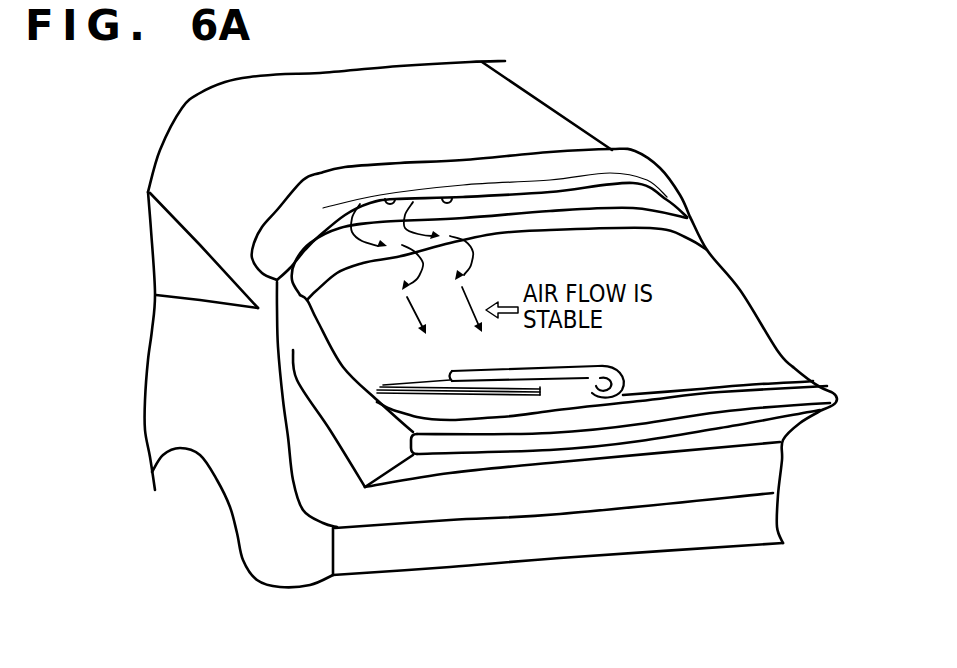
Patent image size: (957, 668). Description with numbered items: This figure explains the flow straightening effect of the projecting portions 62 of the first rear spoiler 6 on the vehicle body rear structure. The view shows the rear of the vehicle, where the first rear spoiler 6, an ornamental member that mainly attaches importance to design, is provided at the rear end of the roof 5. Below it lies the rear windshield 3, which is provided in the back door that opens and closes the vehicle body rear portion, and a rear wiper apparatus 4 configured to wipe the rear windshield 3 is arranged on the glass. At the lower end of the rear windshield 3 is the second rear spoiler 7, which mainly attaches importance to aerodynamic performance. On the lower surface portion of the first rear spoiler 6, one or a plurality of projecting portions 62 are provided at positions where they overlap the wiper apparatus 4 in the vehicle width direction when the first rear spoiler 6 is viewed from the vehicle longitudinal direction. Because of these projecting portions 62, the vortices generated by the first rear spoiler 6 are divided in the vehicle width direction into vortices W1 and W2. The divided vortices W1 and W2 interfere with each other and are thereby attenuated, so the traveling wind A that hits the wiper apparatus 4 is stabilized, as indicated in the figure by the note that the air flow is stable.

The rear windshield 3 is at (773, 357).
The rear wiper apparatus 4 is at (557, 373).
The roof 5 is at (520, 107).
The first rear spoiler 6 is at (580, 163).
The projecting portions 62 is at (447, 197).
The second rear spoiler 7 is at (833, 405).
The vortex W1 is at (397, 268).
The vortex W2 is at (476, 250).
The traveling wind A is at (473, 305).